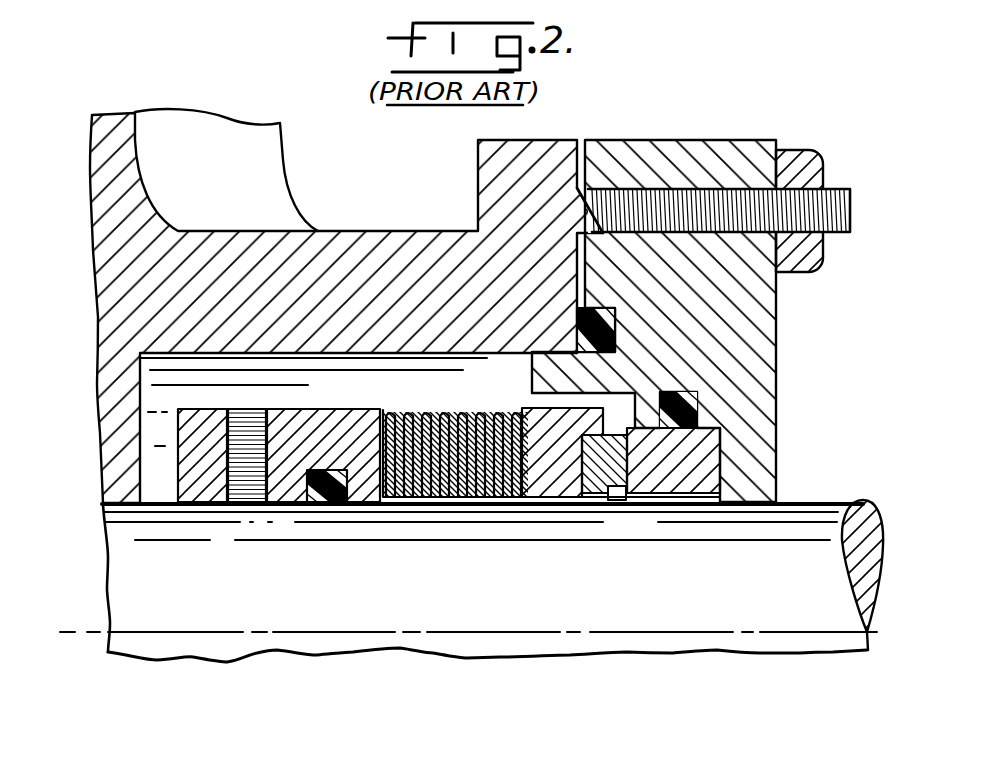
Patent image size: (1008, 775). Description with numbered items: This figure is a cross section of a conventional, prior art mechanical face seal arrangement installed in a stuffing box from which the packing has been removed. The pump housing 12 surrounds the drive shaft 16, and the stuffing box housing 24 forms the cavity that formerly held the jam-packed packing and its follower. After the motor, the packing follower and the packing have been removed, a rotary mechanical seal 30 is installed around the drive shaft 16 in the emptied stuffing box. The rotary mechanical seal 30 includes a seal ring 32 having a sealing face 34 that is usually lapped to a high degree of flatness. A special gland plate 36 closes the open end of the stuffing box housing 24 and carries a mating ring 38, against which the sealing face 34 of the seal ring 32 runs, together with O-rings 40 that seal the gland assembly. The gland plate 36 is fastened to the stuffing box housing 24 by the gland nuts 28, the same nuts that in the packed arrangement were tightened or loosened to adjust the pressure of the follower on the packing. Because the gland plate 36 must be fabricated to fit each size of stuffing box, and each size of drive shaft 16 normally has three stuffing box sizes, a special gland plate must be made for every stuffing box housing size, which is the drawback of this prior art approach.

The housing 12 is at (112, 116).
The drive shaft 16 is at (822, 503).
The stuffing box housing 24 is at (388, 239).
The gland nuts 28 is at (800, 153).
The rotary mechanical seal 30 is at (678, 503).
The seal ring 32 is at (592, 494).
The sealing face 34 is at (632, 475).
The gland plate 36 is at (758, 313).
The mating ring 38 is at (705, 456).
The O-rings 40 is at (578, 328).